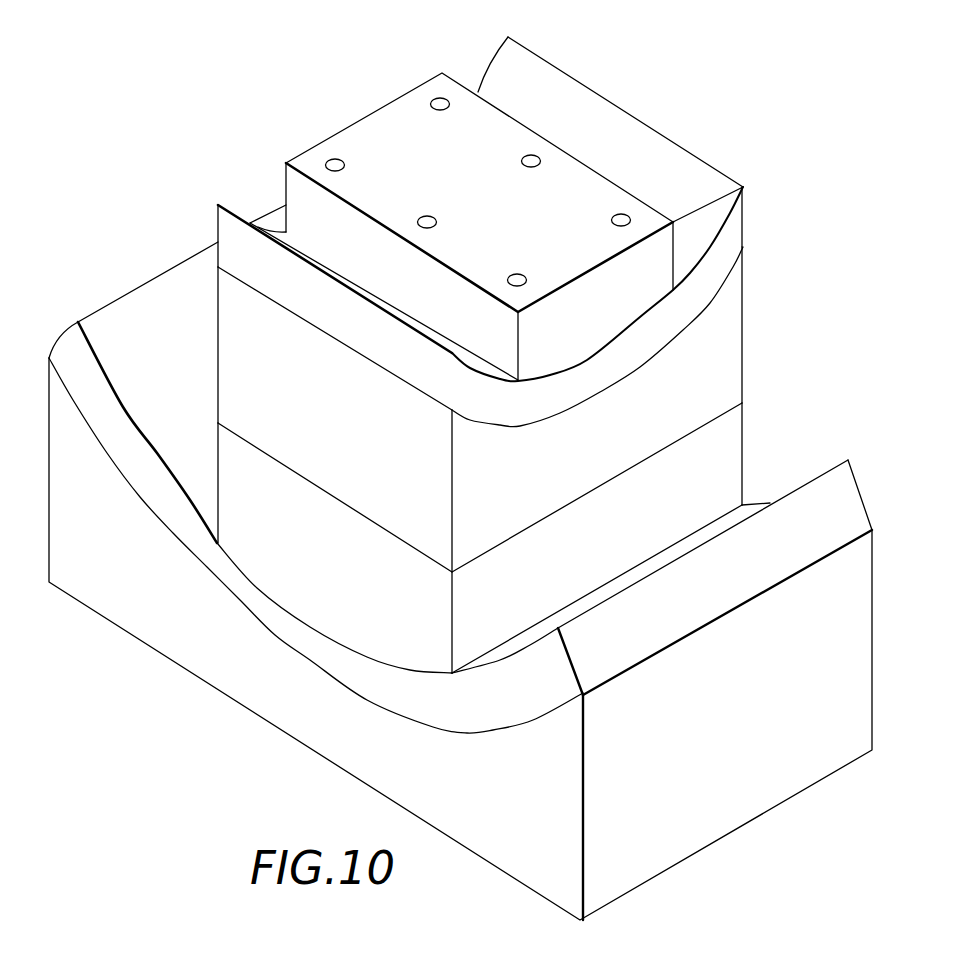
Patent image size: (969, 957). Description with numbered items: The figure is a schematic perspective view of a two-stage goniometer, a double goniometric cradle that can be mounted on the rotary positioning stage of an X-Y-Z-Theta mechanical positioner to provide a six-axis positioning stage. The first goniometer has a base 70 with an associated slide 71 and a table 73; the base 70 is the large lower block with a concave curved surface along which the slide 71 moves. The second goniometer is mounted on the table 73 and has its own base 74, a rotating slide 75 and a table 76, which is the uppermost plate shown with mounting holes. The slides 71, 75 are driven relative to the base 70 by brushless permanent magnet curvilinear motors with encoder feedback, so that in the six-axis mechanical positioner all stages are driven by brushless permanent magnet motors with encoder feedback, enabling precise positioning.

The base 70 is at (118, 594).
The slide 71 is at (480, 717).
The table 73 is at (342, 582).
The base 74 is at (341, 428).
The rotating slide 75 is at (733, 229).
The table 76 is at (414, 104).